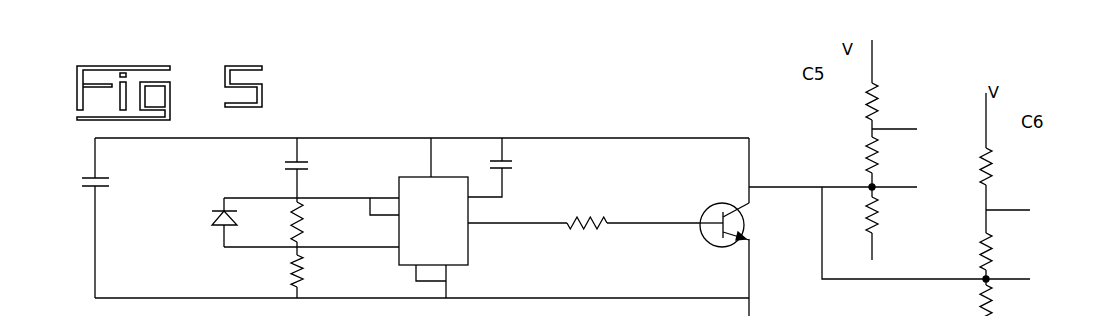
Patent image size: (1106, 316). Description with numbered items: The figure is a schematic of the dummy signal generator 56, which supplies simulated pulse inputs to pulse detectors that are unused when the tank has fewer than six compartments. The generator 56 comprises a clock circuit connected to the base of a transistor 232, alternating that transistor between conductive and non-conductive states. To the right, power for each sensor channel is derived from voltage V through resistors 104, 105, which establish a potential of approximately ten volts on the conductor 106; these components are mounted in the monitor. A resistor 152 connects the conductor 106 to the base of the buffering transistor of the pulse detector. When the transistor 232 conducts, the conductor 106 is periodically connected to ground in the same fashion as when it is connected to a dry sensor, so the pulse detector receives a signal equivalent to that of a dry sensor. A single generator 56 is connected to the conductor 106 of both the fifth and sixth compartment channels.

The dummy signal generator 56 is at (628, 126).
The transistor 232 is at (707, 243).
The conductor 106 is at (836, 186).
The resistor 104 is at (878, 90).
The resistor 105 is at (877, 153).
The resistor 152 is at (878, 222).